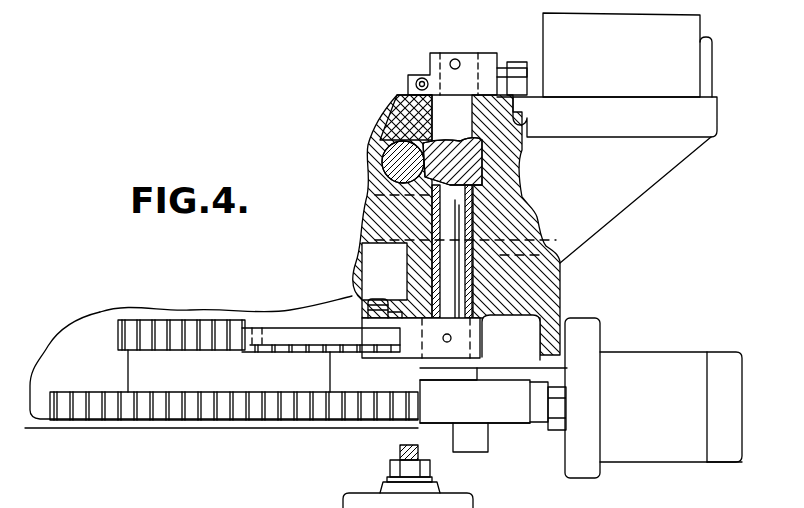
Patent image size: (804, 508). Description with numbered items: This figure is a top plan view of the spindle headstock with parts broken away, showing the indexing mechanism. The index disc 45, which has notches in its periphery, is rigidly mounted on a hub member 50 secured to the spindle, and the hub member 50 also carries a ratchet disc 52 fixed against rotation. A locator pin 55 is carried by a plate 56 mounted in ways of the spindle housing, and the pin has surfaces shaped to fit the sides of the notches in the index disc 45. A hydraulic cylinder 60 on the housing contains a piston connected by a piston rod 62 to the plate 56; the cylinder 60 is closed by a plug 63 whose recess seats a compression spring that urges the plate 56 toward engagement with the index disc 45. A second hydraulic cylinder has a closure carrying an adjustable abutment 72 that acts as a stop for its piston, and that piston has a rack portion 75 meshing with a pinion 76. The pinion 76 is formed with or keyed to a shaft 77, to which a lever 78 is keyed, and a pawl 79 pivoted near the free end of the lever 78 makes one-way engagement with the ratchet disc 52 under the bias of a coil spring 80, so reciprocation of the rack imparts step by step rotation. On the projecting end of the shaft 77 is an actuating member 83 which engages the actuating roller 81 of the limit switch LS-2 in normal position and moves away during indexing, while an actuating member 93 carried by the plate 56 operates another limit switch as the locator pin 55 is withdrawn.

The index disc 45 is at (220, 405).
The hub member 50 is at (128, 364).
The ratchet disc 52 is at (192, 330).
The locator pin 55 is at (412, 398).
The plate 56 is at (365, 432).
The hydraulic cylinder 60 is at (684, 363).
The piston rod 62 is at (550, 425).
The plug 63 is at (730, 456).
The adjustable abutment 72 is at (398, 455).
The rack portion 75 is at (374, 145).
The pinion 76 is at (470, 172).
The shaft 77 is at (450, 235).
The lever 78 is at (556, 322).
The pawl 79 is at (268, 332).
The coil spring 80 is at (366, 304).
The actuating roller 81 is at (518, 60).
The actuating member 83 is at (505, 58).
The actuating member 93 is at (475, 446).
The limit switch LS-2 is at (682, 63).